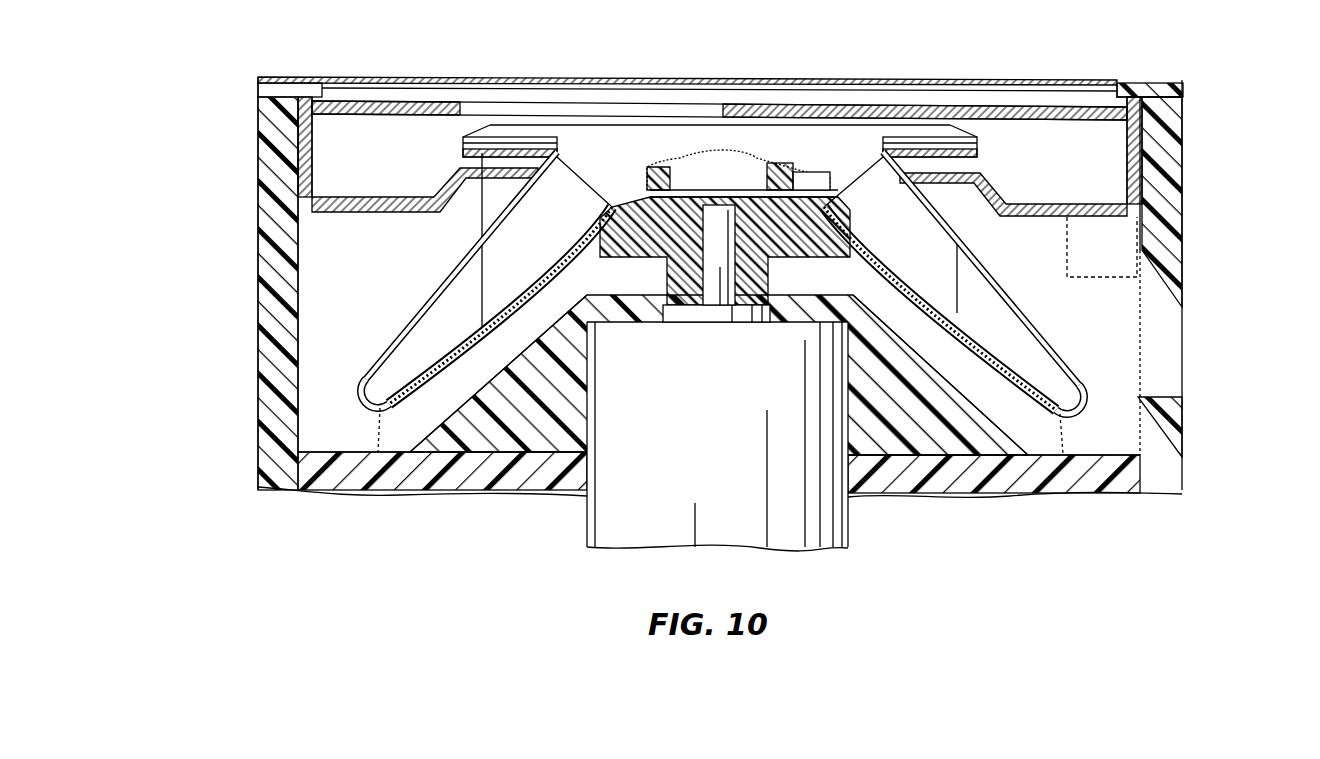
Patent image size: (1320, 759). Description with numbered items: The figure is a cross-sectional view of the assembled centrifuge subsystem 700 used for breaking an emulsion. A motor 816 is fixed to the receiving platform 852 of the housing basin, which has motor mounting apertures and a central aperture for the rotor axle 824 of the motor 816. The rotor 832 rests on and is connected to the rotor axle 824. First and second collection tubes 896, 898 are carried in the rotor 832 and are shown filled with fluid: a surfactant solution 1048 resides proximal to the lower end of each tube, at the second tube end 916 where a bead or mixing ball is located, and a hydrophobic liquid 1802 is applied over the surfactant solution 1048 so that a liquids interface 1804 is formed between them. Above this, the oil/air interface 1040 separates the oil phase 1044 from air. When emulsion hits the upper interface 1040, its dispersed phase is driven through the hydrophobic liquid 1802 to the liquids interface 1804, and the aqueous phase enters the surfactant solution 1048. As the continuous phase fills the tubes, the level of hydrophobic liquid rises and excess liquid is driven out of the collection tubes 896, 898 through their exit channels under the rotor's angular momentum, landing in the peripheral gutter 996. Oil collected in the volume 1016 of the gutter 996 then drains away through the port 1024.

The centrifuge subsystem 700 is at (238, 531).
The motor 816 is at (813, 515).
The rotor axle 824 is at (673, 180).
The rotor 832 is at (713, 232).
The receiving platform 852 is at (475, 437).
The first collection tube 896 is at (380, 415).
The second collection tube 898 is at (1000, 425).
The second tube end 916 is at (1100, 415).
The peripheral gutter 996 is at (1037, 137).
The volume of the gutter 1016 is at (1082, 158).
The port 1024 is at (1100, 243).
The oil/air interface 1040 is at (545, 224).
The oil phase 1044 is at (620, 222).
The surfactant solution 1048 is at (460, 307).
The hydrophobic liquid 1802 is at (520, 275).
The liquids interface 1804 is at (522, 300).